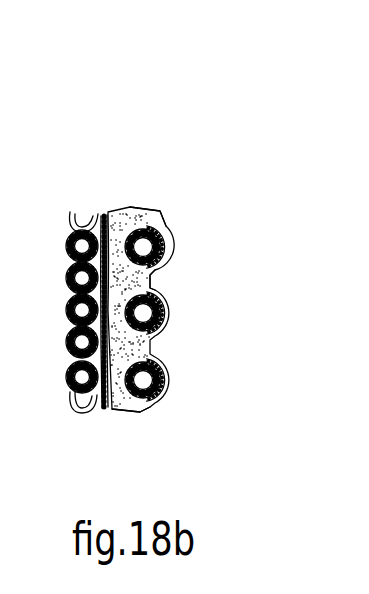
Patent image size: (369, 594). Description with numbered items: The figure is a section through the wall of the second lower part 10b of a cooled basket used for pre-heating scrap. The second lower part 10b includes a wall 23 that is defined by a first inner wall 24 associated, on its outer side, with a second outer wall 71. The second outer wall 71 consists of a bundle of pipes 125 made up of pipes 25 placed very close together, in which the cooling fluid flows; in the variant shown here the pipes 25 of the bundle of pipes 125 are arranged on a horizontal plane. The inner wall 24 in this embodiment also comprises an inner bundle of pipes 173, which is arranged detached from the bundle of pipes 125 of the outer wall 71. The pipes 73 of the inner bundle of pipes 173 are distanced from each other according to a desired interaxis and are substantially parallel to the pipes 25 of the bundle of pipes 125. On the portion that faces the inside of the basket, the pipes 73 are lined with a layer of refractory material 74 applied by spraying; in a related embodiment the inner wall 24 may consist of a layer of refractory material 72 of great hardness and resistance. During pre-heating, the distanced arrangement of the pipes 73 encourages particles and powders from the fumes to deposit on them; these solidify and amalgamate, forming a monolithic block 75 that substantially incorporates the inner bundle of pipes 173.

The second lower part 10b is at (128, 99).
The wall 23 is at (117, 197).
The first inner wall 24 is at (157, 199).
The vertical pipes 25 is at (68, 386).
The bundle of pipes 125 is at (78, 199).
The second outer wall 71 is at (84, 421).
The layer of refractory material 72 is at (107, 410).
The pipes 73 is at (172, 320).
The layer of refractory material 74 is at (170, 242).
The monolithic block 75 is at (160, 277).
The inner bundle of pipes 173 is at (182, 392).